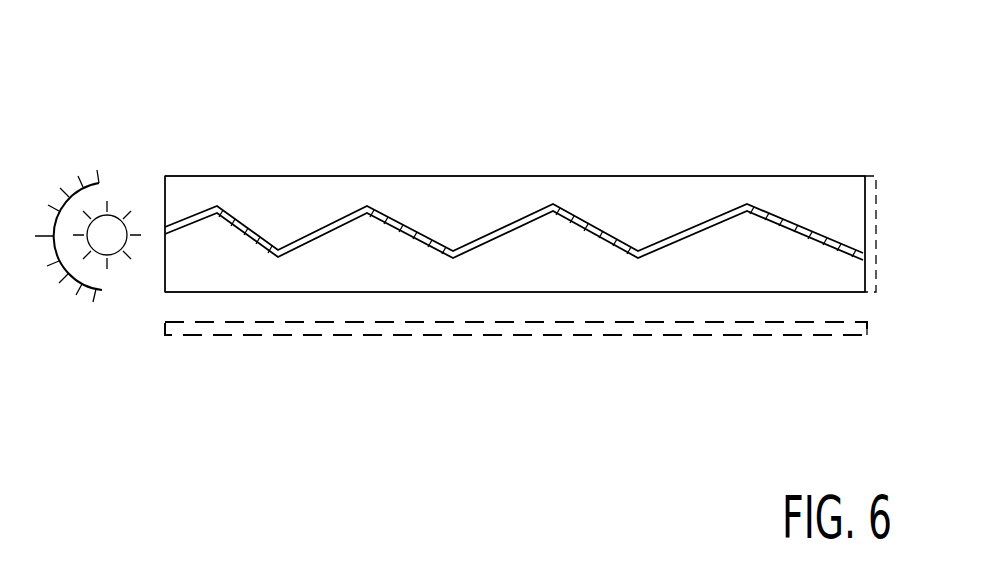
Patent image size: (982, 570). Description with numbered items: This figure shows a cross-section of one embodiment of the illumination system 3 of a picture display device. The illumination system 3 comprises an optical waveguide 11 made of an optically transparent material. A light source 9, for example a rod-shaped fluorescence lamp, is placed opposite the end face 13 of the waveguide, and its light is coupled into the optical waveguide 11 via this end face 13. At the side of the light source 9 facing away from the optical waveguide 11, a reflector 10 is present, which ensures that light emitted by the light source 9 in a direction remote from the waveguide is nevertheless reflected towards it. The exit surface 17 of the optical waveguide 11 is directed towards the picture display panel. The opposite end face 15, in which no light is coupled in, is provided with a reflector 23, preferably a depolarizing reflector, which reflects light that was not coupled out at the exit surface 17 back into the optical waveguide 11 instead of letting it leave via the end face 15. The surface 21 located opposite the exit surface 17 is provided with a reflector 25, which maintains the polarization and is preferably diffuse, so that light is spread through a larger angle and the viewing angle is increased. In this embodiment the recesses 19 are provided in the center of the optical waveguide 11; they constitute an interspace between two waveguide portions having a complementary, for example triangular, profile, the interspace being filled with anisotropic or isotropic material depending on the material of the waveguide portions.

The illumination system 3 is at (235, 115).
The light source 9 is at (111, 228).
The reflector 10 is at (87, 297).
The optical waveguide 11 is at (727, 190).
The end face 13 is at (166, 288).
The end face 15 is at (861, 198).
The exit surface 17 is at (523, 175).
The recesses 19 is at (592, 220).
The surface 21 is at (405, 293).
The reflector 23 is at (870, 305).
The reflector 25 is at (655, 335).